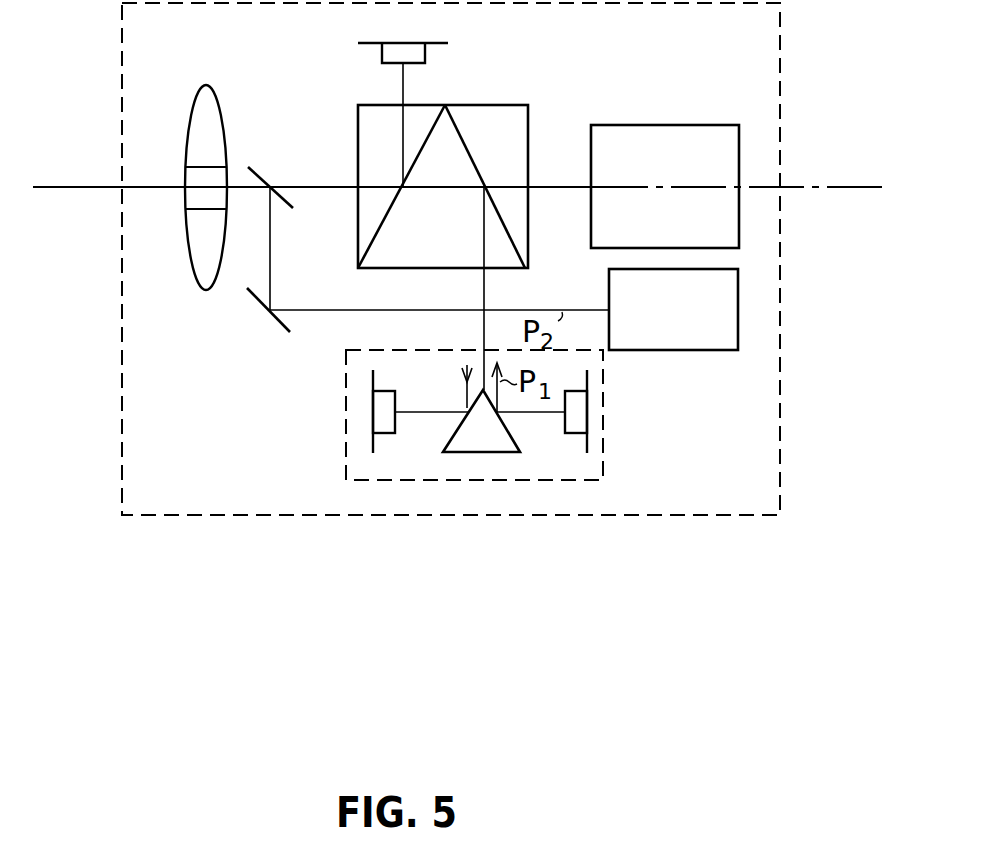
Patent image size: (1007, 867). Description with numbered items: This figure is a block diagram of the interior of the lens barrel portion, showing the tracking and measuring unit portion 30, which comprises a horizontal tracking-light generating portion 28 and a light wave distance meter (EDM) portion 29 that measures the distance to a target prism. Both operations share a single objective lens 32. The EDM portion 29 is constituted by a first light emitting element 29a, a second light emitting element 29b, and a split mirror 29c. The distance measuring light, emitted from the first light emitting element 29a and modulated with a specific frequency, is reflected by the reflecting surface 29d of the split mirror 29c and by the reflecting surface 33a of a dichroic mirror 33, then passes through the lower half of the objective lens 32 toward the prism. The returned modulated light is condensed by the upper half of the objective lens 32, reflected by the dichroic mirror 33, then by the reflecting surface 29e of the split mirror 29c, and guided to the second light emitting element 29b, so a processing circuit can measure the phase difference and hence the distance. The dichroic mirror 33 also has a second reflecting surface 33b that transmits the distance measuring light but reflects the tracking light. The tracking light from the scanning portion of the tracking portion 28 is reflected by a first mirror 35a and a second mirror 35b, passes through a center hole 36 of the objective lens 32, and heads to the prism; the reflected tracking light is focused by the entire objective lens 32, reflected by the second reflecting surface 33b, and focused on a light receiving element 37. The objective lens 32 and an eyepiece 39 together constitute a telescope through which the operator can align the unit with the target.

The horizontal tracking-light generating portion 28 is at (665, 343).
The light wave distance meter (EDM) portion 29 is at (437, 480).
The first light emitting element 29a is at (590, 423).
The second light emitting element 29b is at (388, 437).
The split mirror 29c is at (485, 447).
The reflecting surface of the split mirror 29d is at (512, 428).
The reflecting surface of the split prism 29e is at (445, 427).
The tracking and measuring unit portion 30 is at (780, 368).
The objective lens 32 is at (205, 259).
The dichroic mirror 33 is at (489, 117).
The reflecting surface of the dichroic mirror 33a is at (478, 168).
The second reflecting surface 33b is at (373, 238).
The first mirror 35a is at (272, 320).
The second mirror 35b is at (253, 174).
The center hole 36 is at (197, 193).
The light receiving element 37 is at (418, 36).
The eyepiece 39 is at (692, 140).